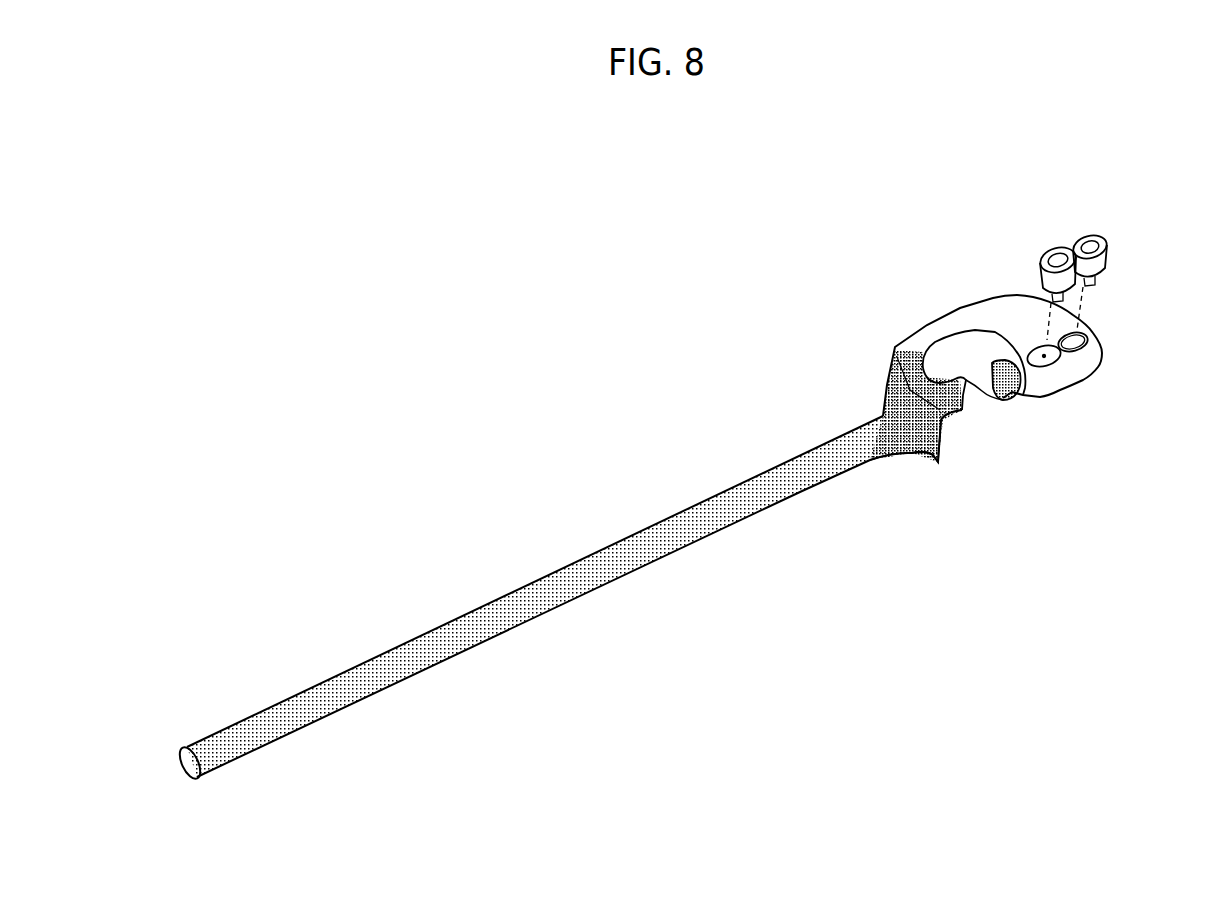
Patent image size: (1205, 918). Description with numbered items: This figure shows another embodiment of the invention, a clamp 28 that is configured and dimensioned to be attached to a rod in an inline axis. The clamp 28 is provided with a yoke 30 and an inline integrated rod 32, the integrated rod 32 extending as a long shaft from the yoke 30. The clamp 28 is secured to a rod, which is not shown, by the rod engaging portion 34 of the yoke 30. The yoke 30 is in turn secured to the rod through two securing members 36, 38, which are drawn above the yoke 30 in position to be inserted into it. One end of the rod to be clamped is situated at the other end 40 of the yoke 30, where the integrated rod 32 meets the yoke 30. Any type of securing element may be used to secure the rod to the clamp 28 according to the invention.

The clamp 28 is at (690, 564).
The yoke 30 is at (922, 543).
The inline integrated rod 32 is at (475, 653).
The rod engaging portion 34 is at (1015, 393).
The securing member 36 is at (1065, 295).
The securing member 38 is at (1105, 273).
The other end of the yoke 40 is at (930, 450).